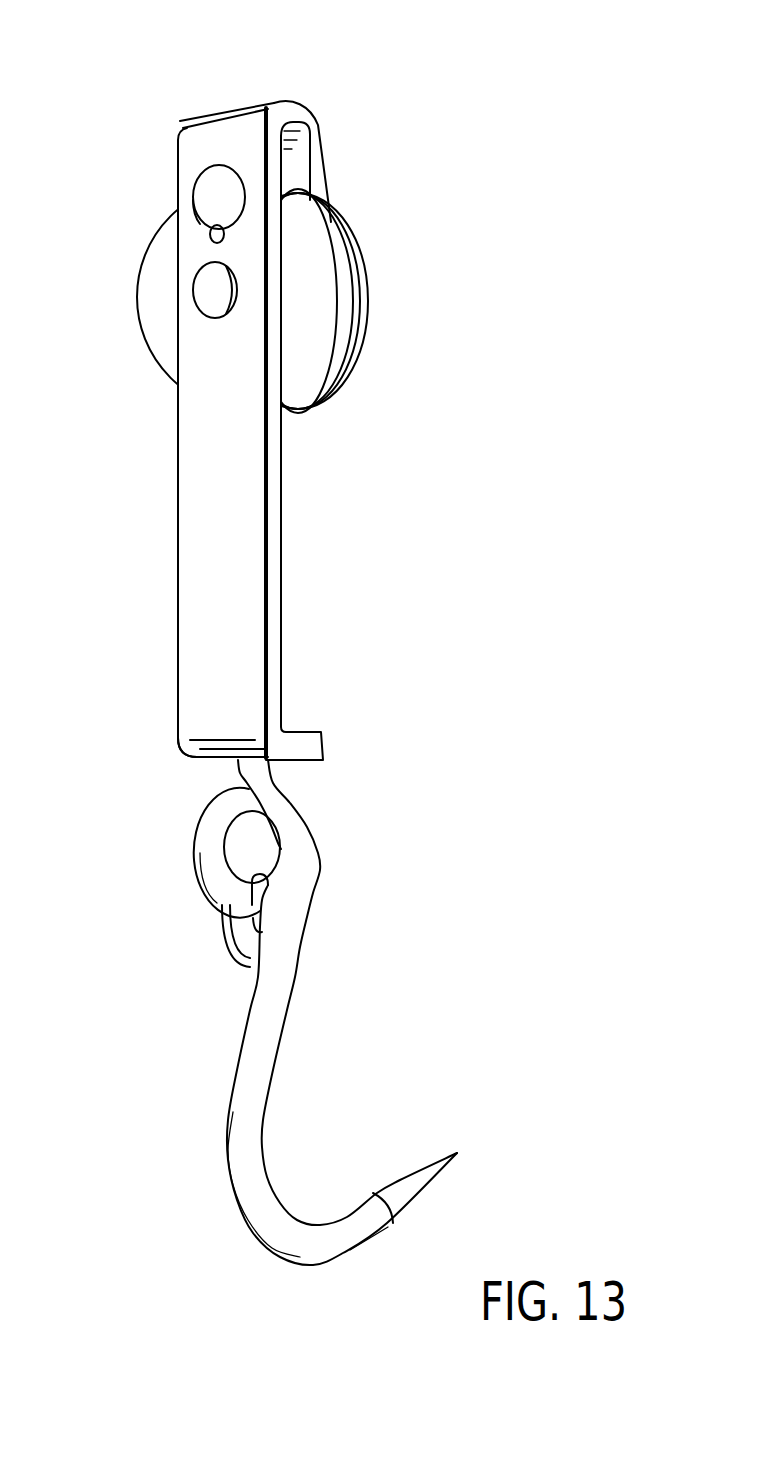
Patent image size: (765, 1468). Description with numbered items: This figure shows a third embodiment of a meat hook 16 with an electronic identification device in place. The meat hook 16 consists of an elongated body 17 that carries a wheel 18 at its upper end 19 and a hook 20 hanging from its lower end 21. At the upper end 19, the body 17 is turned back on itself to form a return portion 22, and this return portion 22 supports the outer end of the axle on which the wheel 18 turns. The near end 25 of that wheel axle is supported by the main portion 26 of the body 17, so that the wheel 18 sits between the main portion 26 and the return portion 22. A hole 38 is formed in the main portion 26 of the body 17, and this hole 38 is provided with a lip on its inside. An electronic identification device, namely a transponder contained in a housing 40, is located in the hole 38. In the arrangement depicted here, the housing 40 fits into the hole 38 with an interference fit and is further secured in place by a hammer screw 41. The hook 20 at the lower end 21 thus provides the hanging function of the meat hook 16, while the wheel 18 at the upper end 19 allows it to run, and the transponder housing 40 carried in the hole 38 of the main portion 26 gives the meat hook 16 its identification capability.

The meat hook 16 is at (380, 588).
The body 17 is at (243, 492).
The wheel 18 is at (370, 313).
The upper end 19 is at (223, 113).
The hook 20 is at (283, 1002).
The lower end 21 is at (180, 734).
The return portion 22 is at (321, 163).
The near end 25 is at (194, 303).
The main portion 26 is at (177, 287).
The hole 38 is at (193, 203).
The housing 40 is at (217, 180).
The hammer screw 41 is at (212, 234).